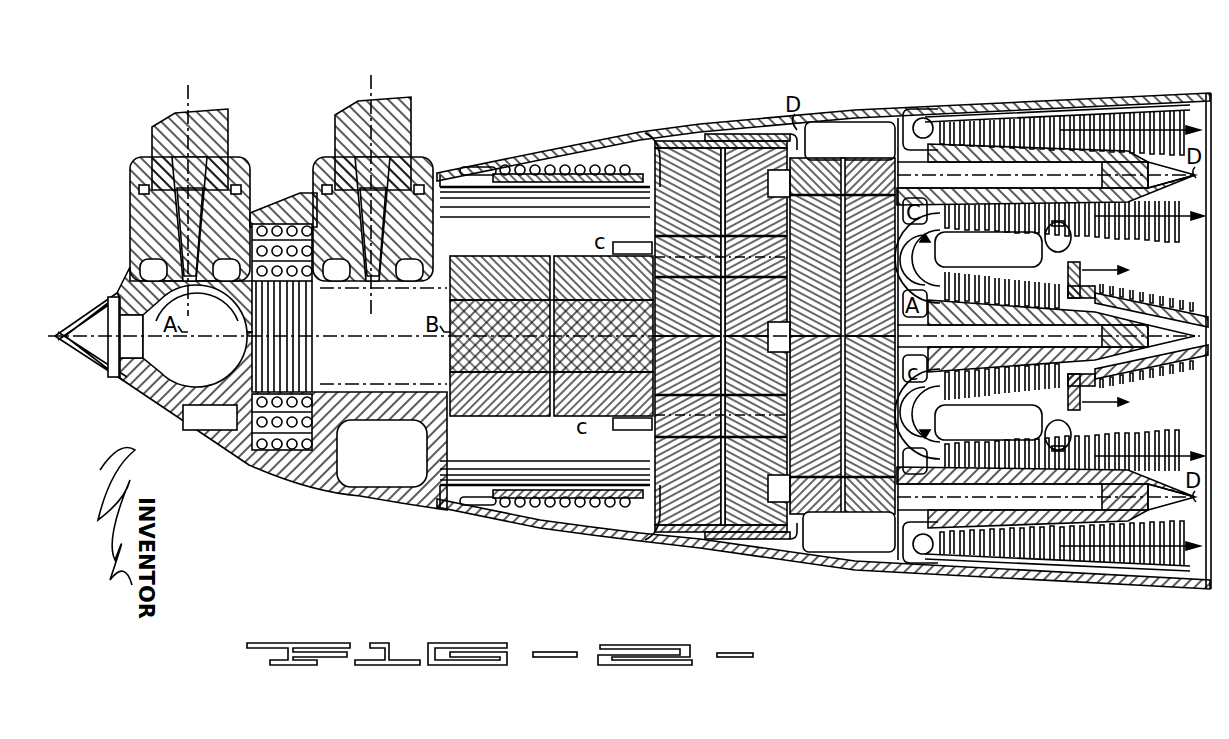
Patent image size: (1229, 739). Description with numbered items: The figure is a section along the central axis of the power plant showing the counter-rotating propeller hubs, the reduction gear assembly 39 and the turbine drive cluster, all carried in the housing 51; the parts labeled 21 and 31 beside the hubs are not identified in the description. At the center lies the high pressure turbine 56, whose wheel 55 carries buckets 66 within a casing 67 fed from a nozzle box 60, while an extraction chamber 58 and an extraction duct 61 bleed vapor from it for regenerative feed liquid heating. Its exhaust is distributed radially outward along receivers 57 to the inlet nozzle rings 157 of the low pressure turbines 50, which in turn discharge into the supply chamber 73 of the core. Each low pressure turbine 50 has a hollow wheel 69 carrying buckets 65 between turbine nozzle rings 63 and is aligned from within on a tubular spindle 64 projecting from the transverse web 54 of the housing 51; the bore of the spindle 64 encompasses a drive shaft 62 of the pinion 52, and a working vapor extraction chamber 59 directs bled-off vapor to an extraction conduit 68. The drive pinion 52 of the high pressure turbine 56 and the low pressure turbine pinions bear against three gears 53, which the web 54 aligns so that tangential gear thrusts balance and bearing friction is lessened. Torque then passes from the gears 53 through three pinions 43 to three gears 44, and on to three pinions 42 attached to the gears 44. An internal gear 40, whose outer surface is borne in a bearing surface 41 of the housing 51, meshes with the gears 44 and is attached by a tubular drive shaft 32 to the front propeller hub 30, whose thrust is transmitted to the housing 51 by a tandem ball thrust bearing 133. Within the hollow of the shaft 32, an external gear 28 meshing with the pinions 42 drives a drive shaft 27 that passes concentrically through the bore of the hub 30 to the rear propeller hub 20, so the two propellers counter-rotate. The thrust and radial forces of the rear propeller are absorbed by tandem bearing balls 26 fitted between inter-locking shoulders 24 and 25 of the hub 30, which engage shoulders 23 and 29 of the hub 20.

The rear propeller hub 20 is at (162, 416).
The front support strut 21 is at (198, 118).
The shoulder 23 is at (256, 223).
The inter-locking shoulder 24 is at (291, 203).
The inter-locking shoulder 25 is at (314, 389).
The tandem bearing balls 26 is at (277, 462).
The drive shaft 27 is at (396, 369).
The external gear 28 is at (503, 418).
The shoulder 29 is at (305, 298).
The front propeller hub 30 is at (347, 482).
The rear support strut 31 is at (378, 106).
The tubular drive shaft 32 is at (490, 197).
The reduction gear assembly 39 is at (702, 546).
The internal gear 40 is at (760, 133).
The bearing surface 41 is at (702, 140).
The pinion 42 is at (567, 297).
The pinion 43 is at (645, 432).
The gear 44 is at (652, 245).
The low pressure turbine 50 is at (1010, 110).
The housing 51 is at (855, 111).
The drive pinion 52 is at (816, 170).
The gear 53 is at (861, 205).
The transverse web 54 is at (902, 117).
The wheel 55 is at (1157, 298).
The high pressure turbine 56 is at (1029, 271).
The receiver 57 is at (949, 248).
The extraction chamber 58 is at (1039, 441).
The working vapor extraction chamber 59 is at (1080, 427).
The nozzle box 60 is at (1150, 373).
The extraction duct 61 is at (1124, 404).
The drive shaft 62 is at (912, 501).
The turbine nozzle rings 63 is at (935, 565).
The tubular spindle 64 is at (935, 563).
The buckets 65 is at (1110, 565).
The buckets 66 is at (952, 425).
The casing 67 is at (1152, 311).
The extraction conduit 68 is at (1103, 267).
The wheel 69 is at (1052, 568).
The supply chamber 73 is at (1196, 128).
The tandem ball thrust bearing 133 is at (532, 163).
The inlet nozzle rings 157 is at (928, 118).